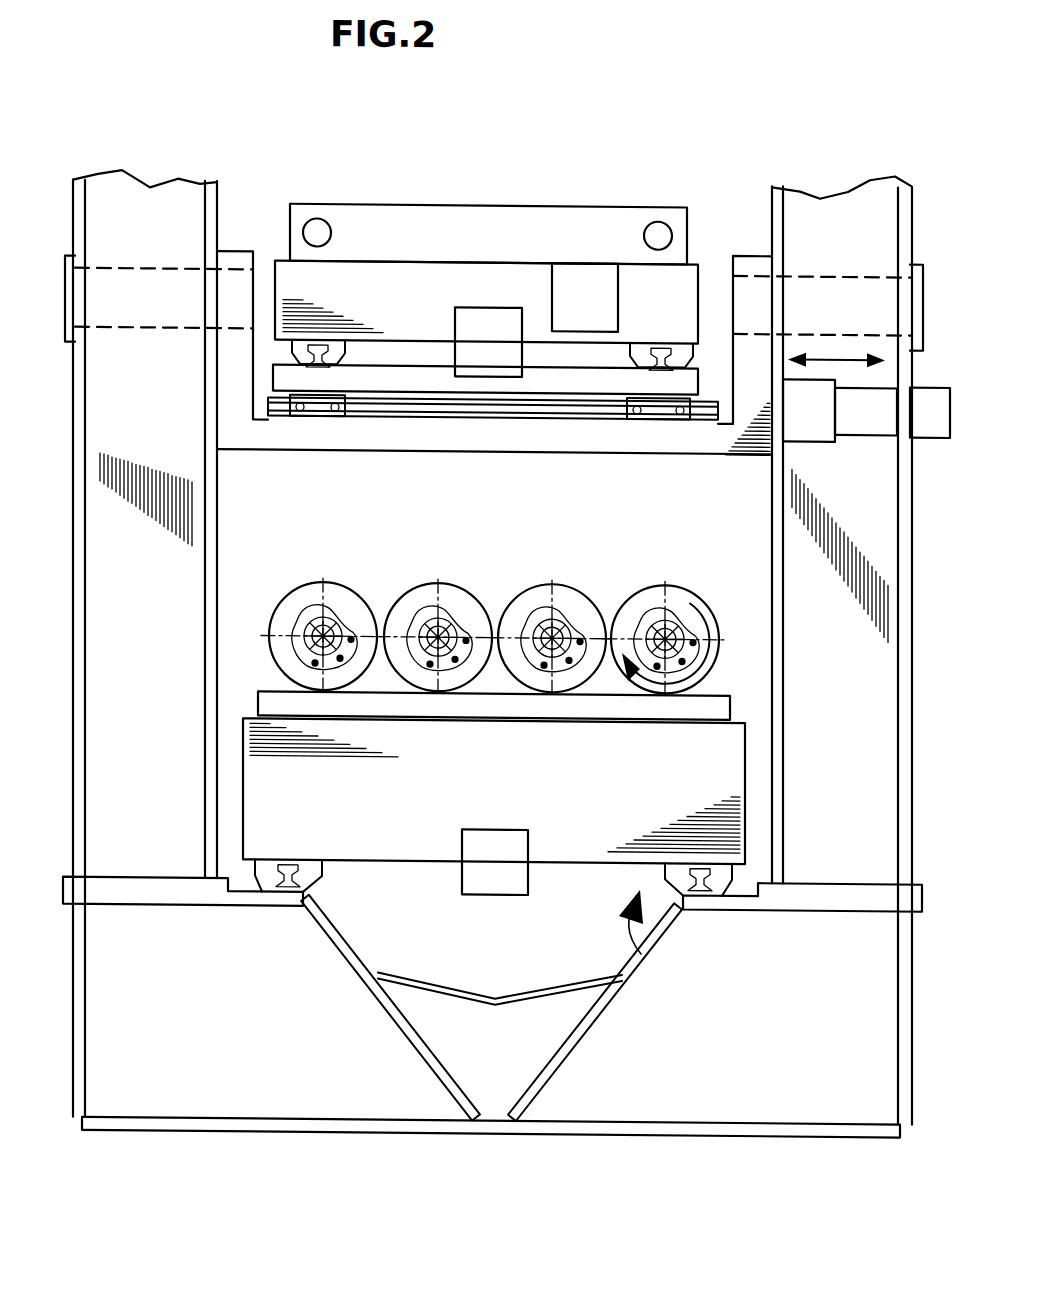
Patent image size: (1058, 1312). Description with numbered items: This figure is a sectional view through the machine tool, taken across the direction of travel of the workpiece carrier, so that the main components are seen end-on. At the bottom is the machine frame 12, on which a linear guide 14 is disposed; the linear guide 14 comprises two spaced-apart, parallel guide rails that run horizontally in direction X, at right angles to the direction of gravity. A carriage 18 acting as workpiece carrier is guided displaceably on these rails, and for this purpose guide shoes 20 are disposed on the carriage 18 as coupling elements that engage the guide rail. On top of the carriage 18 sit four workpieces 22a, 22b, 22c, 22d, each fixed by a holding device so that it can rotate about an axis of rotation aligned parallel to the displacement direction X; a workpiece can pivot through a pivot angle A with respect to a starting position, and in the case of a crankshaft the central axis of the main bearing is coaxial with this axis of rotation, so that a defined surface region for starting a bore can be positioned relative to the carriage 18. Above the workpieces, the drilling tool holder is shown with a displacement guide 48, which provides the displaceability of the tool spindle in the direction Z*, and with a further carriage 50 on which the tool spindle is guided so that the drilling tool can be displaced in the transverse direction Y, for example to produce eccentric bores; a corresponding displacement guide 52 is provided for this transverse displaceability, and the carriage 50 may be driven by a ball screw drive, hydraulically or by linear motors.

The machine frame 12 is at (729, 1083).
The linear guide 14 is at (660, 941).
The carriage 18 is at (730, 738).
The guide shoes 20 is at (262, 893).
The workpiece 22a is at (312, 589).
The workpiece 22b is at (427, 591).
The workpiece 22c is at (537, 591).
The workpiece 22d is at (642, 591).
The displacement guide 48 is at (640, 357).
The carriage 50 is at (399, 372).
The displacement guide 52 is at (683, 415).